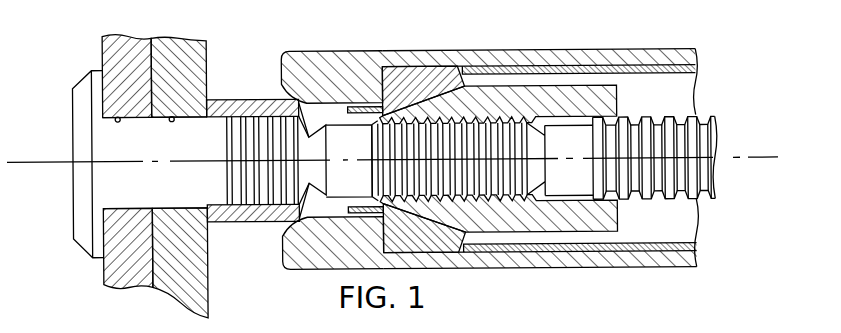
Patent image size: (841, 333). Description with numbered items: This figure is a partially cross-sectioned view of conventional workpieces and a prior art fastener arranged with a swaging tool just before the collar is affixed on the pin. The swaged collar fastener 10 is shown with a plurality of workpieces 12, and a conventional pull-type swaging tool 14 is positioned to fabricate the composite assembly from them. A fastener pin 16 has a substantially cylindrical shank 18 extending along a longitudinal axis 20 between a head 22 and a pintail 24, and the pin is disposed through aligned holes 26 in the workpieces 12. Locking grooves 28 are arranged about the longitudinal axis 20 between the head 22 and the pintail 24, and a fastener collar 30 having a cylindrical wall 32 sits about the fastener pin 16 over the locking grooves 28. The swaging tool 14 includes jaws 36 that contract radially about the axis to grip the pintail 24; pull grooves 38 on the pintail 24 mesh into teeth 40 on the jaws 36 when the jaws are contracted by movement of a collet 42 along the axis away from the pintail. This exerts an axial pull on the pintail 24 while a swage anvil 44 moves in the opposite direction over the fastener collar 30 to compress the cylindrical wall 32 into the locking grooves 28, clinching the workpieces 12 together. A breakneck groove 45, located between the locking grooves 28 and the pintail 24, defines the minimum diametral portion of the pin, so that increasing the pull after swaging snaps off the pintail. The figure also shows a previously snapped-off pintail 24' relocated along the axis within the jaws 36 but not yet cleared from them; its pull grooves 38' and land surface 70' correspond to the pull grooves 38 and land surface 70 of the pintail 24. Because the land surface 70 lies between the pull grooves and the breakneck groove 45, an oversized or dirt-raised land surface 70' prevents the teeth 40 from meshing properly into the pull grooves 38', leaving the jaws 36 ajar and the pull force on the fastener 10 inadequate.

The swaged collar fastener 10 is at (233, 98).
The workpieces 12 is at (154, 174).
The pull-type swaging tool 14 is at (490, 134).
The fastener pin 16 is at (185, 130).
The shank 18 is at (162, 191).
The longitudinal axis 20 is at (58, 158).
The head 22 is at (82, 89).
The pintail 24 is at (333, 229).
The pintail (snapped off) 24' is at (556, 141).
The aligned holes 26 is at (119, 116).
The locking grooves 28 is at (266, 147).
The fastener collar 30 is at (271, 223).
The cylindrical wall 32 is at (295, 119).
The jaws 36 is at (448, 86).
The pull grooves 38 is at (424, 227).
The pull grooves (of snapped-off pintail) 38' is at (667, 140).
The teeth 40 is at (543, 130).
The collet 42 is at (403, 80).
The swage anvil 44 is at (343, 66).
The breakneck groove 45 is at (308, 128).
The land surface 70 is at (349, 161).
The land surface (of snapped-off pintail) 70' is at (569, 160).